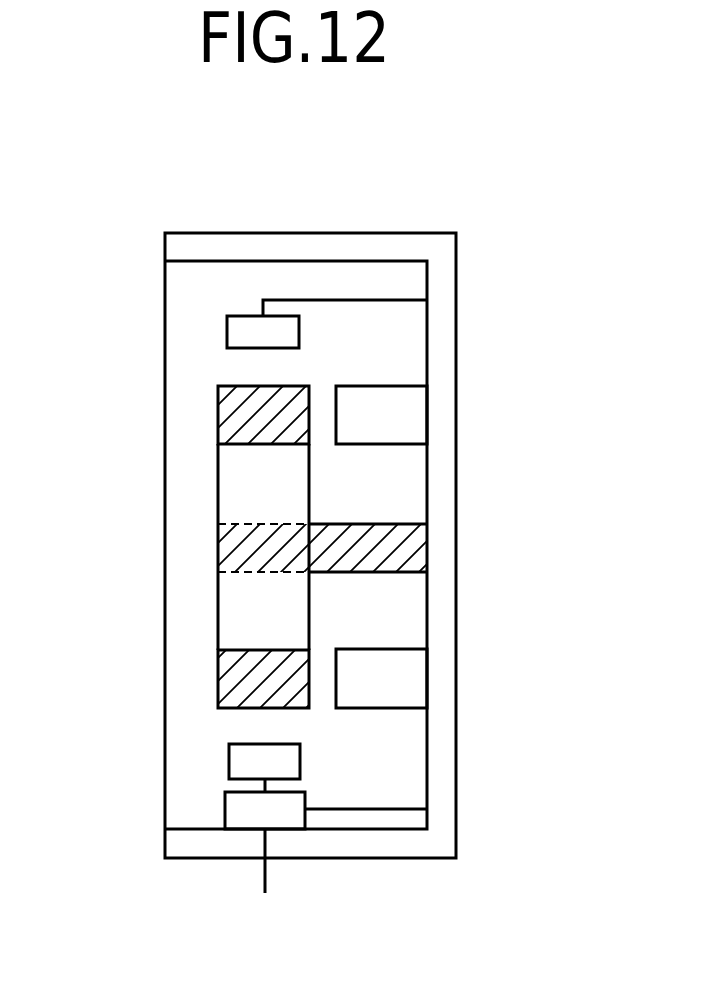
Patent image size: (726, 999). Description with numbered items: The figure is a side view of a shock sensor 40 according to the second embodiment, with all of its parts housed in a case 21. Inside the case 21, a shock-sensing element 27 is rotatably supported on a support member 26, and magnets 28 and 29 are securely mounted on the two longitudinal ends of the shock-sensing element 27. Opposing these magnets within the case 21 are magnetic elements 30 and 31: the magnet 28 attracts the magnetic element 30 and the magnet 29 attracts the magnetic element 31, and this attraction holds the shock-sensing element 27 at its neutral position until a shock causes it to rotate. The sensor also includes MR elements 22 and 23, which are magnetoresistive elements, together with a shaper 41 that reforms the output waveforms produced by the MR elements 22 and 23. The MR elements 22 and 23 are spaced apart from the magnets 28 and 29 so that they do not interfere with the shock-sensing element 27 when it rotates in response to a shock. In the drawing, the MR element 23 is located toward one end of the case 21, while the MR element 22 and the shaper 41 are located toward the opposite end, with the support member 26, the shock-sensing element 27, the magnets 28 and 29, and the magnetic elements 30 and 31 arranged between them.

The shock sensor 40 is at (497, 272).
The case 21 is at (374, 233).
The MR element 23 is at (227, 336).
The magnet 29 is at (218, 413).
The magnetic element 31 is at (413, 412).
The support member 26 is at (218, 546).
The shock-sensing element 27 is at (230, 620).
The magnet 28 is at (230, 678).
The magnetic element 30 is at (413, 677).
The MR element 22 is at (232, 761).
The shaper 41 is at (228, 812).